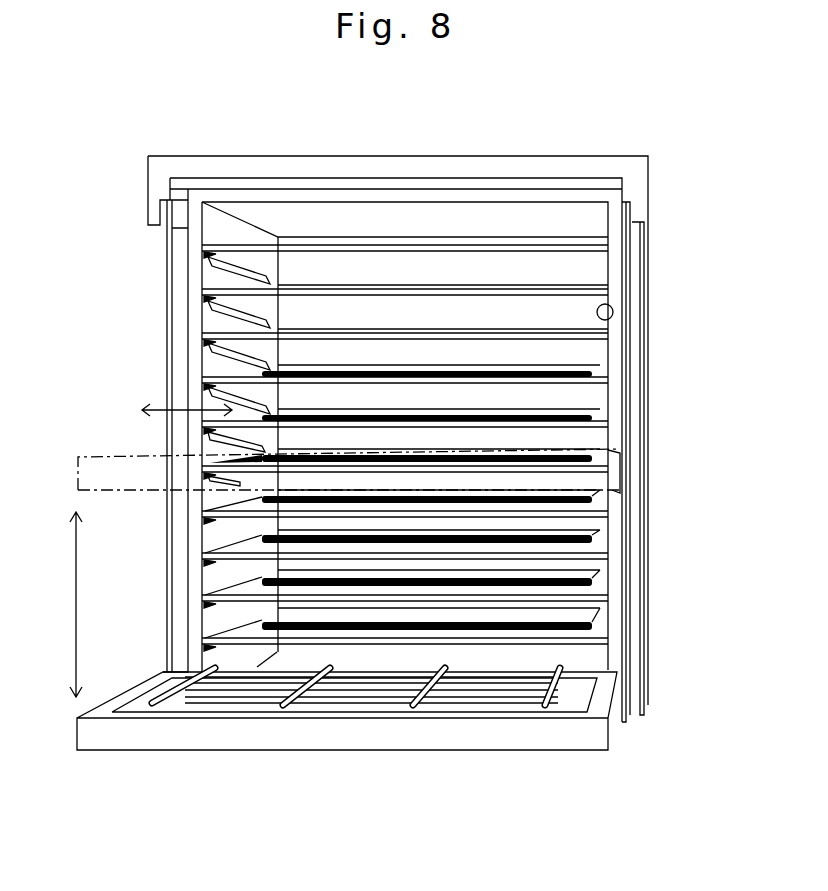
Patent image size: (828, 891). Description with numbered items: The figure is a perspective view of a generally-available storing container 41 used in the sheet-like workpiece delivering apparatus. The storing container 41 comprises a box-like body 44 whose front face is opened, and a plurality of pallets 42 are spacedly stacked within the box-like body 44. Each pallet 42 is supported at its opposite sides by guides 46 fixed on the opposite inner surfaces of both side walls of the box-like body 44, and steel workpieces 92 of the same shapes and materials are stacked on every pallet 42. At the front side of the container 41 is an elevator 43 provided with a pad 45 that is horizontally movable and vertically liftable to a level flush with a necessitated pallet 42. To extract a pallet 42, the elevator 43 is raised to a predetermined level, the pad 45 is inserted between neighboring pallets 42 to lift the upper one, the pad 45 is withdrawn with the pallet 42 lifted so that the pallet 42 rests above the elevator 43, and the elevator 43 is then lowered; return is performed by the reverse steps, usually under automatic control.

The storing container 41 is at (133, 230).
The pallet 42 is at (206, 335).
The elevator 43 is at (290, 735).
The box-like body 44 is at (560, 155).
The pad 45 is at (193, 700).
The guides 46 is at (243, 270).
The workpiece 92 is at (548, 615).